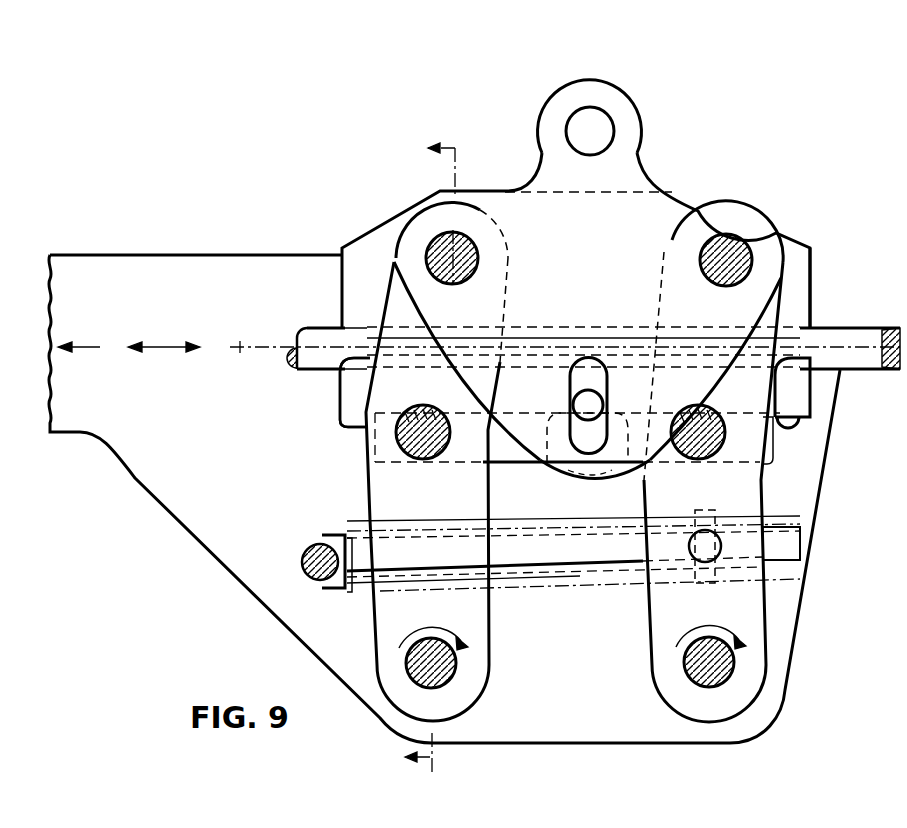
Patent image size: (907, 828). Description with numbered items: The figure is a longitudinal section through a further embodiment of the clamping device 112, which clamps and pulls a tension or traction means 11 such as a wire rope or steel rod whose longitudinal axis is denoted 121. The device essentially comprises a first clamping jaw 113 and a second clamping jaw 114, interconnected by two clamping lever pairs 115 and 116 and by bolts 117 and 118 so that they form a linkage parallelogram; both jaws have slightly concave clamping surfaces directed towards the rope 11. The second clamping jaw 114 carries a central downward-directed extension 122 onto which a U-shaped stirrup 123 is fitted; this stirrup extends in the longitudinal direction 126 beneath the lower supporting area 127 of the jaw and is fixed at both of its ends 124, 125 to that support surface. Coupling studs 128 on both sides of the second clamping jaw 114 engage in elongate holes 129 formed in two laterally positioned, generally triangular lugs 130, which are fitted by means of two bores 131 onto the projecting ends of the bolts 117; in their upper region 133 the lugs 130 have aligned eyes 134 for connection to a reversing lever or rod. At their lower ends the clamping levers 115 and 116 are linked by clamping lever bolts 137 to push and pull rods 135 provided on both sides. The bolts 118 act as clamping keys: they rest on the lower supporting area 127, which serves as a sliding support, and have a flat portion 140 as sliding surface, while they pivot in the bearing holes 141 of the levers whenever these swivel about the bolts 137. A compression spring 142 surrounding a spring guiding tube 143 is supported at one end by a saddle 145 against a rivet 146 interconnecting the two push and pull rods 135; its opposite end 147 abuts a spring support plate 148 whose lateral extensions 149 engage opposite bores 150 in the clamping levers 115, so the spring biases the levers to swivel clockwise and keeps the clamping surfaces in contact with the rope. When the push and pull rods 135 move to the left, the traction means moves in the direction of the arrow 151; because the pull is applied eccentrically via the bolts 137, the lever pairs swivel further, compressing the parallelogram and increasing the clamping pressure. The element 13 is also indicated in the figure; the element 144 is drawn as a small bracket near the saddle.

The traction means 11 is at (868, 340).
The frame part 13 is at (898, 597).
The clamping device 112 is at (786, 160).
The first clamping jaw 113 is at (800, 251).
The second clamping jaw 114 is at (803, 405).
The clamping lever pair 115 is at (763, 488).
The clamping lever pair 116 is at (480, 528).
The bolts 117 is at (476, 250).
The clamping bolts 118 is at (405, 440).
The longitudinal axis 121 is at (240, 344).
The extension 122 is at (557, 475).
The U-shaped stirrup 123 is at (495, 466).
The end of stirrup 124 is at (800, 430).
The end of stirrup 125 is at (345, 418).
The longitudinal direction 126 is at (169, 346).
The lower supporting area 127 is at (497, 413).
The coupling studs 128 is at (598, 408).
The elongate holes 129 is at (590, 360).
The lugs 130 is at (613, 237).
The bores 131 is at (436, 243).
The upper region 133 is at (556, 117).
The eyes 134 is at (612, 124).
The push and pull rods 135 is at (190, 520).
The clamping lever bolts 137 is at (457, 665).
The flat portion 140 is at (428, 412).
The bearing holes 141 is at (418, 455).
The compression spring 142 is at (585, 585).
The spring guiding tube 143 is at (505, 568).
The bracket 144 is at (352, 592).
The saddle 145 is at (334, 532).
The rivet 146 is at (317, 550).
The opposite end of compression spring 147 is at (683, 577).
The spring support plate 148 is at (712, 598).
The lateral extensions 149 is at (708, 540).
The bores 150 is at (710, 563).
The arrow 151 is at (86, 346).